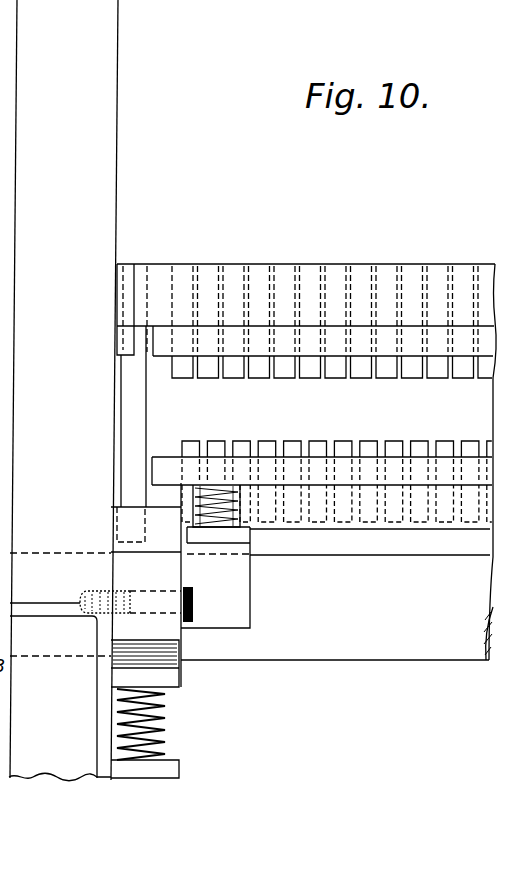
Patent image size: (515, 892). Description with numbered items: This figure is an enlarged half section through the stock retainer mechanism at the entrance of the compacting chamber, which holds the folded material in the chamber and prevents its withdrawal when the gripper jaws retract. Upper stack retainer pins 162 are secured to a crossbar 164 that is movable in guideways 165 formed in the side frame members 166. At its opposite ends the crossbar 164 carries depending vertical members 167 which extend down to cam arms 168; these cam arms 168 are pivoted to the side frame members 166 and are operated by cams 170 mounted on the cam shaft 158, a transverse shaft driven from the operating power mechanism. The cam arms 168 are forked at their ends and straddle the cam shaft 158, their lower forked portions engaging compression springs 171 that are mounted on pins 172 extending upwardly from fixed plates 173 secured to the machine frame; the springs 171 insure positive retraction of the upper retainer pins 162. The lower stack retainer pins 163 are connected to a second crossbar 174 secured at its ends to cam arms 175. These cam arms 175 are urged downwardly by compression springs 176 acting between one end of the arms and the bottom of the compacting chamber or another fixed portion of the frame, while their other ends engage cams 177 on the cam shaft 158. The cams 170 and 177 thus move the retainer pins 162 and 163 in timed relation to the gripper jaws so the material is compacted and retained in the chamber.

The cam shaft 158 is at (441, 650).
The upper stack retainer pins 162 is at (485, 376).
The lower stack retainer pins 163 is at (421, 445).
The crossbar 164 is at (165, 272).
The guideways 165 is at (120, 318).
The side frame members 166 is at (114, 120).
The depending vertical members 167 is at (130, 388).
The cam arms 168 is at (172, 680).
The cams 170 is at (130, 660).
The compression springs 171 is at (166, 718).
The pins 172 is at (166, 739).
The fixed plates 173 is at (170, 768).
The crossbar 174 is at (418, 525).
The cam arms 175 is at (252, 537).
The compression springs 176 is at (240, 484).
The cams 177 is at (252, 593).